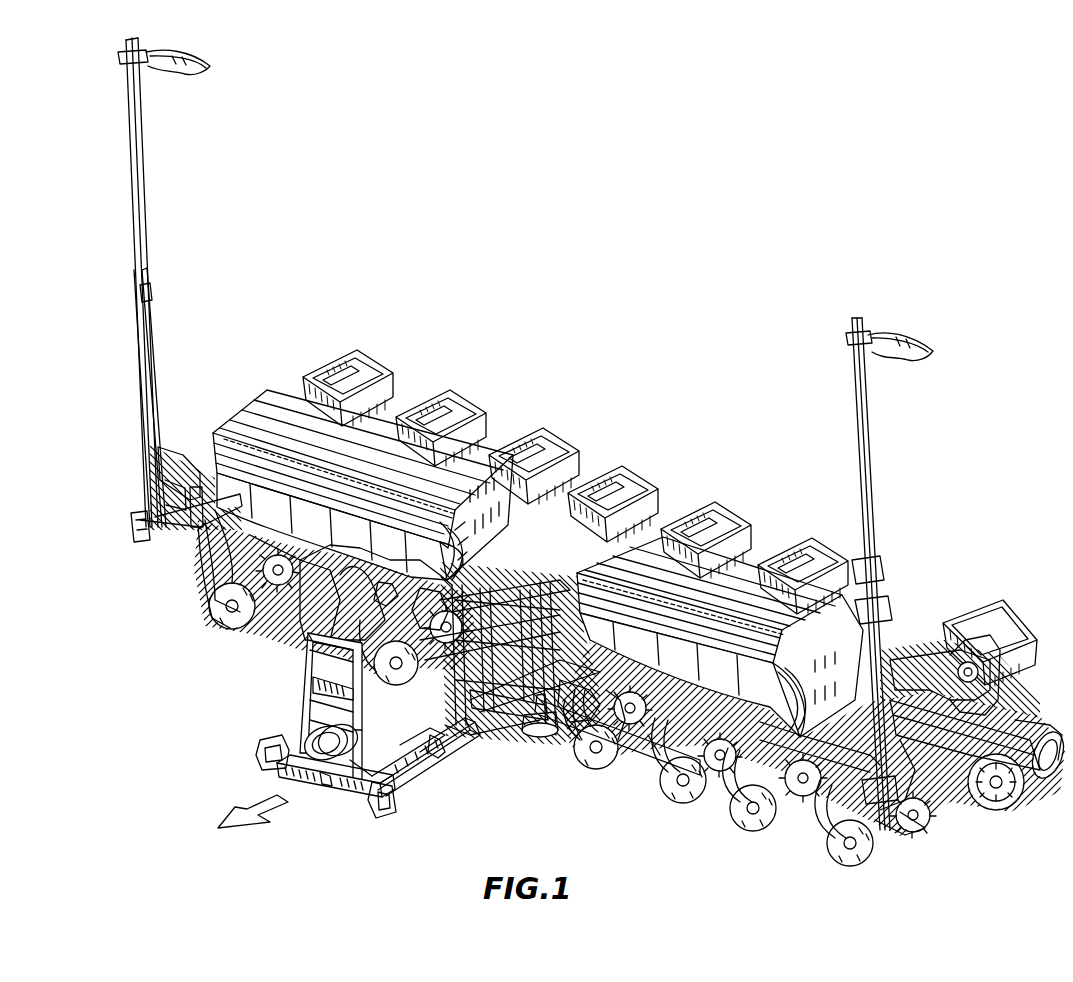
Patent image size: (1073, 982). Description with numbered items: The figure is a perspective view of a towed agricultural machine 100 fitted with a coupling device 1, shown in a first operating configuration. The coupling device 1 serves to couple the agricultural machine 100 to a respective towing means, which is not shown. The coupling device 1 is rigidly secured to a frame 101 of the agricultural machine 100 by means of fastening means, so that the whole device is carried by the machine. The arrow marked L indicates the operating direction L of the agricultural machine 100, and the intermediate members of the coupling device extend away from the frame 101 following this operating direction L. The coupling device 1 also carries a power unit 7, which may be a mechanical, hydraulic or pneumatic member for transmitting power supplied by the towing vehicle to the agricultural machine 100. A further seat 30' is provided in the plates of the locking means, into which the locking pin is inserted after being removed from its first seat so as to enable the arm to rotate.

The towed agricultural machine 100 is at (491, 336).
The power unit 7 is at (320, 711).
The coupling device 1 is at (436, 766).
The further seat 30' is at (524, 734).
The frame 101 is at (607, 780).
The operating direction L is at (262, 802).